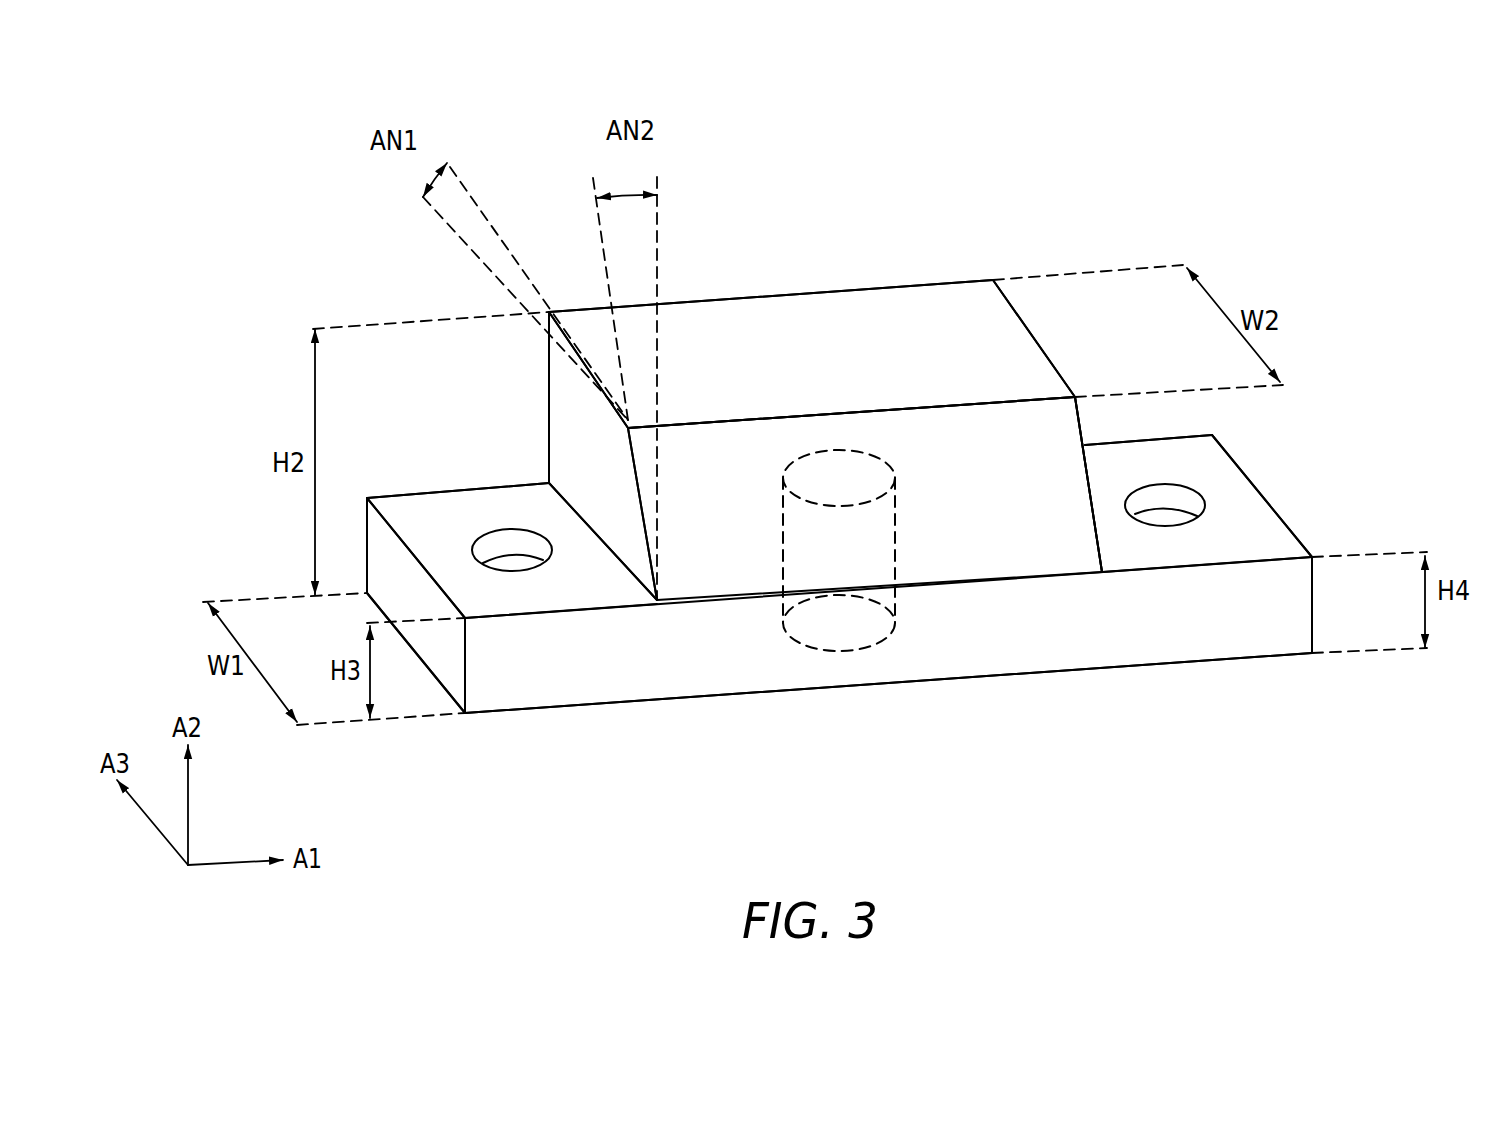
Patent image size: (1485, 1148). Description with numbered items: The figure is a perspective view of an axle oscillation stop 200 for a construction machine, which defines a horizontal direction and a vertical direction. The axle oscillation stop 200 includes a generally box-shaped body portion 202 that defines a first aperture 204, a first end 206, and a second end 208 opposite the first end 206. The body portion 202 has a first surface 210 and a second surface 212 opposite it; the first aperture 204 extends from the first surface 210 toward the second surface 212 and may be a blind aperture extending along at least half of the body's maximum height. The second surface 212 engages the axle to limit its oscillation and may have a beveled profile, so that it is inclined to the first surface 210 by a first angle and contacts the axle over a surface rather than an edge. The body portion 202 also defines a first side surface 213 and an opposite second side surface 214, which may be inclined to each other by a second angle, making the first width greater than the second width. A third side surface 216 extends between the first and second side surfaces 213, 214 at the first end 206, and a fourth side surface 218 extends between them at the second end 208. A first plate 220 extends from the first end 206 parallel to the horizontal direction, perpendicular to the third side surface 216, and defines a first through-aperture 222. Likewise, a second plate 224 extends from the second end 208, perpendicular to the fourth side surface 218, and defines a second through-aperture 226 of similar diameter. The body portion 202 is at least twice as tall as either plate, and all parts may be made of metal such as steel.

The axle oscillation stop 200 is at (1147, 137).
The body portion 202 is at (860, 273).
The first aperture 204 is at (838, 628).
The first end 206 is at (538, 338).
The second end 208 is at (1040, 305).
The first surface 210 is at (788, 693).
The second surface 212 is at (743, 323).
The first side surface 213 is at (988, 551).
The second side surface 214 is at (548, 433).
The third side surface 216 is at (593, 417).
The fourth side surface 218 is at (1090, 485).
The first plate 220 is at (423, 513).
The first through-aperture 222 is at (512, 552).
The second plate 224 is at (1252, 507).
The second through-aperture 226 is at (1165, 505).